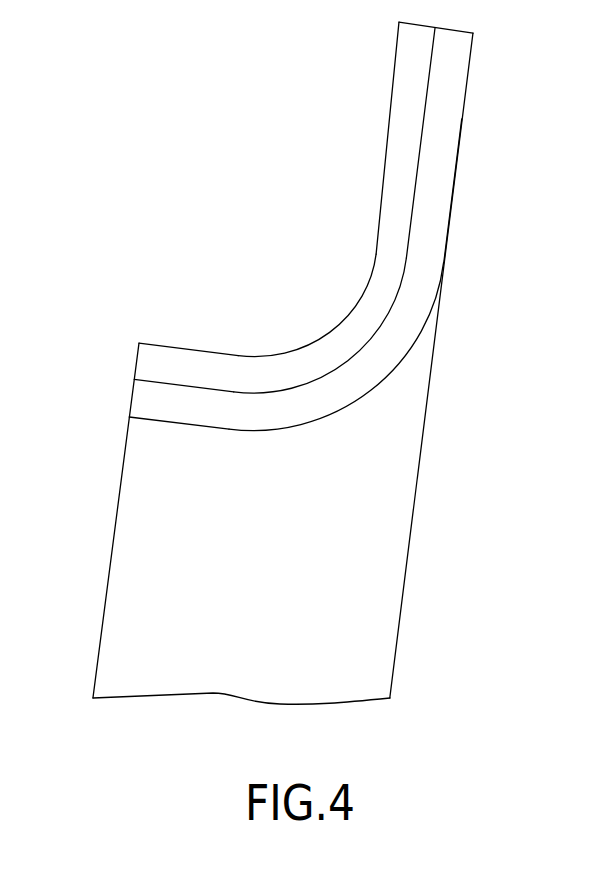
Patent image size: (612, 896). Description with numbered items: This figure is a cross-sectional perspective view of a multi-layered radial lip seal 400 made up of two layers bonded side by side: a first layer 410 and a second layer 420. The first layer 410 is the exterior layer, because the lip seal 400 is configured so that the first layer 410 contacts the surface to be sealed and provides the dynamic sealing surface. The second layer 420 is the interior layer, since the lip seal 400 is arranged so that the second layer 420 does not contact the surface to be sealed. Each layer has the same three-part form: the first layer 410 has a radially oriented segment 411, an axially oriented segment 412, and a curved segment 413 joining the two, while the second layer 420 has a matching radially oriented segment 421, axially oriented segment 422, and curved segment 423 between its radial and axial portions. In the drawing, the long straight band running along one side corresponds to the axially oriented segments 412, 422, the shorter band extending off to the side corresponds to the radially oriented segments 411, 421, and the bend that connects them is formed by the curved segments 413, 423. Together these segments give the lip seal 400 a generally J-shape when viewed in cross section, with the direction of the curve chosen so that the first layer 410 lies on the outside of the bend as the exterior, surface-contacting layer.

The multi-layered radial lip seal 400 is at (126, 140).
The first layer 410 is at (426, 223).
The radially oriented segment 411 is at (445, 87).
The axially oriented segment 412 is at (185, 410).
The curved segment 413 is at (382, 360).
The second layer 420 is at (335, 313).
The radially oriented segment 421 is at (407, 74).
The axially oriented segment 422 is at (150, 365).
The curved segment 423 is at (313, 362).